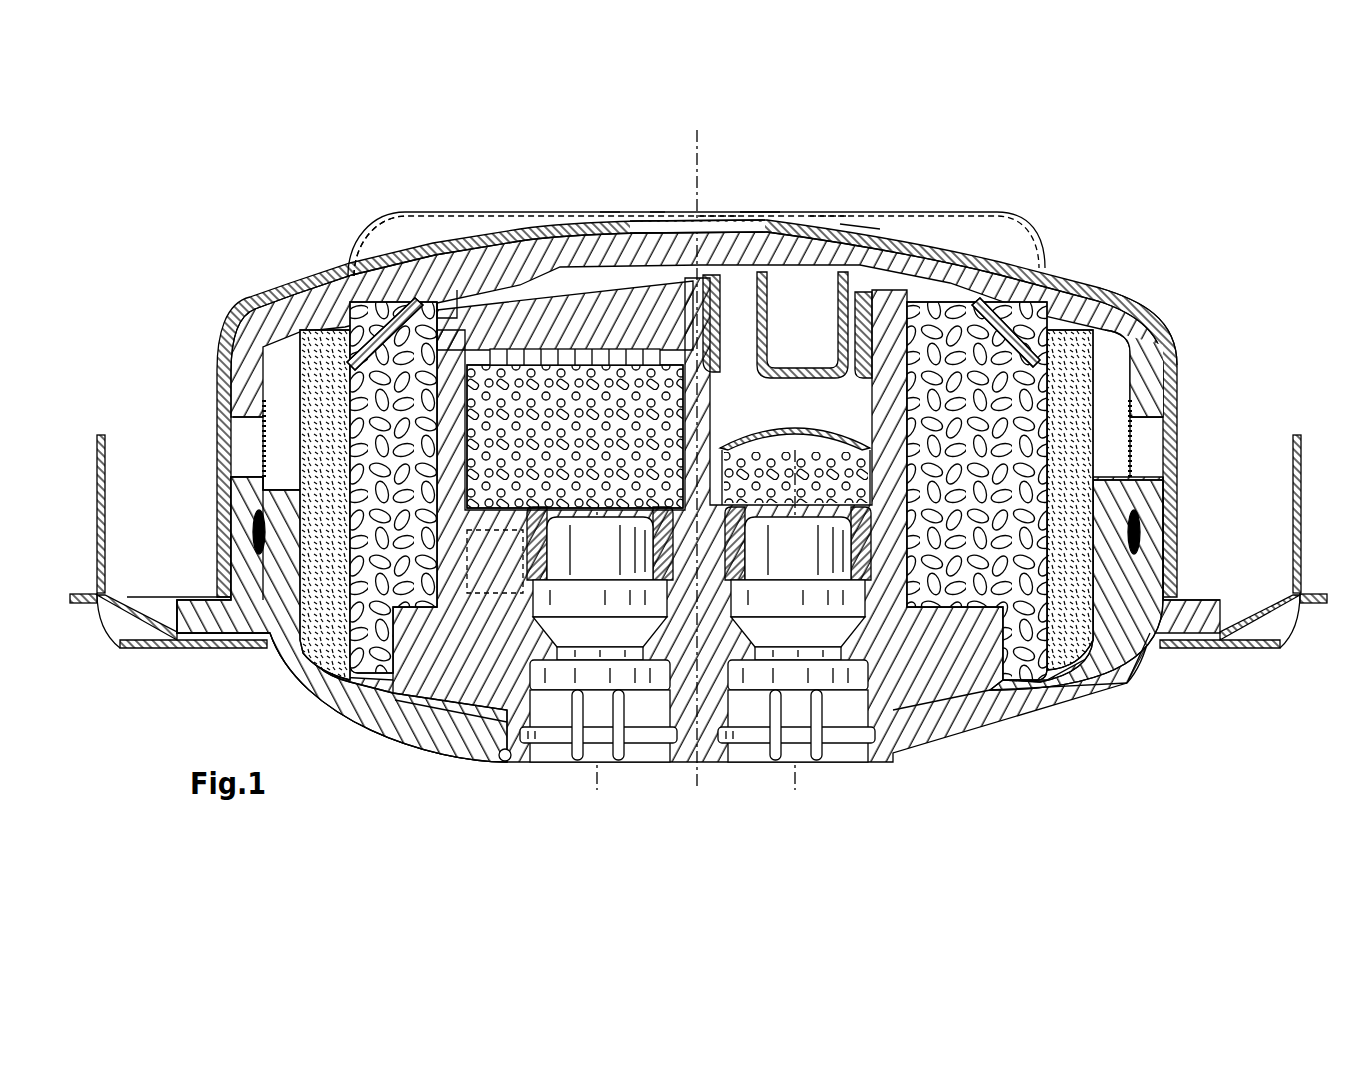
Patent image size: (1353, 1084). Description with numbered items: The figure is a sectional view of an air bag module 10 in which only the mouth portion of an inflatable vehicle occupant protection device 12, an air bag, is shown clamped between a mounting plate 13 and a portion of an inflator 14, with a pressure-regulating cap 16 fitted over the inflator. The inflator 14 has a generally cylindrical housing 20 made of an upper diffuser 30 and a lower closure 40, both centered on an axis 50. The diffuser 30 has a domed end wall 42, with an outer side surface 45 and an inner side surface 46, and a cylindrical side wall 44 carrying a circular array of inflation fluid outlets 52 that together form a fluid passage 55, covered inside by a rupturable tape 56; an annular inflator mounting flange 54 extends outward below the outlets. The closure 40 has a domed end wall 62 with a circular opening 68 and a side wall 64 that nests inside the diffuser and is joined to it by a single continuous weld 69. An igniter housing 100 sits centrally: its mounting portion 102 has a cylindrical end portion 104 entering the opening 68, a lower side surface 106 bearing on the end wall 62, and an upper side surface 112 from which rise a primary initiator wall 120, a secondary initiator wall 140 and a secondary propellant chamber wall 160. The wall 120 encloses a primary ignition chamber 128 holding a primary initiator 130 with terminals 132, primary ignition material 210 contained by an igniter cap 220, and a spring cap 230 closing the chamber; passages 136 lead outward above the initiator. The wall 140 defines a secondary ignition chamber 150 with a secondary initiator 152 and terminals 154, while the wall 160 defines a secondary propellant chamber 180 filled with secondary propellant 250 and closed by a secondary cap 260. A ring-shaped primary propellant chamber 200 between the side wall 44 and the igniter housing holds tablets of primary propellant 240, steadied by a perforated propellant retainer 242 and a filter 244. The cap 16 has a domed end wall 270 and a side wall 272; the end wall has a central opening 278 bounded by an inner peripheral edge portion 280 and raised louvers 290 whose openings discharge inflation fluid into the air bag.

The air bag module 10 is at (340, 805).
The inflatable vehicle occupant protection device 12 is at (115, 440).
The mounting plate 13 is at (1245, 658).
The inflator 14 is at (1000, 185).
The cap 16 is at (1152, 300).
The housing 20 is at (610, 220).
The diffuser 30 is at (657, 222).
The closure 40 is at (323, 719).
The end wall 42 is at (490, 320).
The side wall 44 is at (222, 357).
The outer side surface 45 is at (892, 463).
The inner side surface 46 is at (378, 318).
The axis 50 is at (700, 150).
The inflation fluid outlets 52 is at (252, 427).
The inflator mounting flange 54 is at (187, 613).
The fluid passage 55 is at (1153, 420).
The rupturable tape 56 is at (260, 453).
The end wall 62 is at (1067, 712).
The side wall 64 is at (290, 585).
The circular opening 68 is at (505, 768).
The weld 69 is at (260, 555).
The igniter housing 100 is at (412, 705).
The mounting portion 102 is at (400, 655).
The cylindrical end portion 104 is at (880, 760).
The lower side surface 106 is at (932, 712).
The upper side surface 112 is at (1003, 693).
The primary initiator wall 120 is at (865, 385).
The primary ignition chamber 128 is at (873, 290).
The primary initiator 130 is at (750, 705).
The terminals 132 is at (770, 768).
The passages 136 is at (1027, 327).
The secondary initiator wall 140 is at (433, 692).
The secondary ignition chamber 150 is at (478, 722).
The secondary initiator 152 is at (558, 720).
The terminals 154 is at (617, 760).
The secondary propellant chamber wall 160 is at (450, 315).
The secondary propellant chamber 180 is at (563, 365).
The primary propellant chamber 200 is at (1077, 280).
The primary ignition material 210 is at (757, 437).
The igniter cap 220 is at (807, 412).
The spring cap 230 is at (830, 248).
The first actuatable inflation fluid source 240 is at (1035, 655).
The propellant retainer 242 is at (365, 343).
The filter 244 is at (320, 373).
The second actuatable inflation fluid source 250 is at (582, 445).
The secondary cap 260 is at (533, 287).
The end wall 270 is at (860, 240).
The side wall 272 is at (1182, 477).
The central opening 278 is at (720, 225).
The inner peripheral edge portion 280 is at (757, 210).
The louvers 290 is at (350, 258).